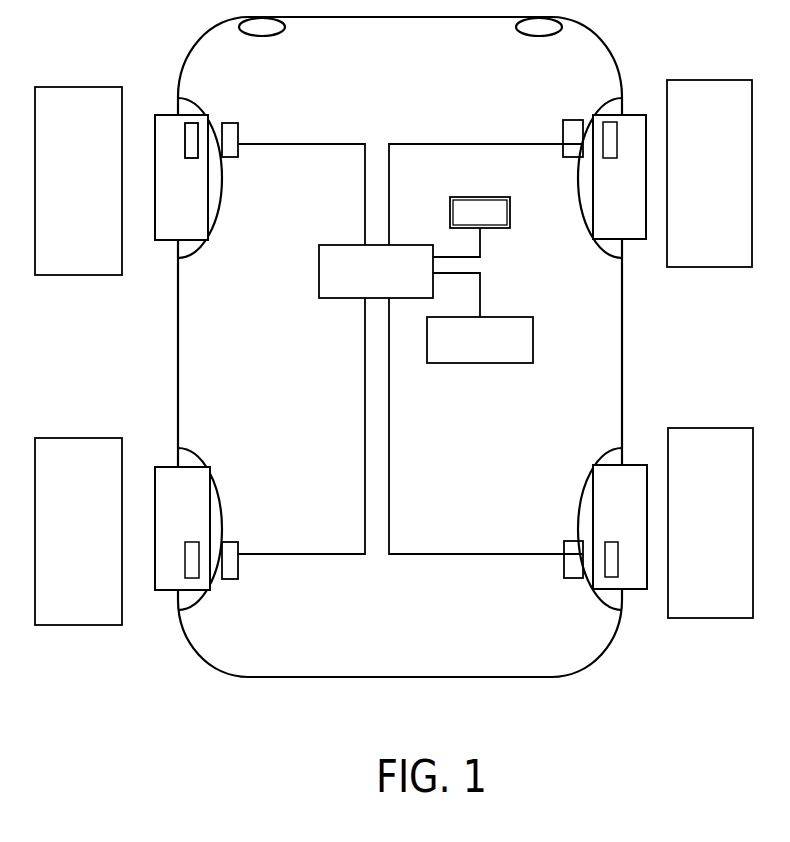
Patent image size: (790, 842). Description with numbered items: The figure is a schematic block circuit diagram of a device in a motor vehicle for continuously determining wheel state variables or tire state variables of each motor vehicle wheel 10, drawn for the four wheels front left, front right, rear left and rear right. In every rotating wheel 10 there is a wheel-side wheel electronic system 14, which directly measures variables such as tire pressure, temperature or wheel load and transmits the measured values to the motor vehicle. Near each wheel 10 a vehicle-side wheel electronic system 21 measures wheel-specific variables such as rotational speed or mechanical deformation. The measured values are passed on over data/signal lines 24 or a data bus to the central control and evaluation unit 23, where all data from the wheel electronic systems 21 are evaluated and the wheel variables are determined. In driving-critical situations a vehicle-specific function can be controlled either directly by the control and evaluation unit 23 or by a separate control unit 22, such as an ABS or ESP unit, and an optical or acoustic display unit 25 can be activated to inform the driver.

The motor vehicle wheel 10 is at (138, 205).
The wheel-side wheel electronic system 14 is at (186, 147).
The vehicle-side wheel electronic system 21 is at (223, 157).
The control unit 22 is at (477, 363).
The central control and evaluation unit 23 is at (318, 270).
The data/signal lines 24 is at (365, 345).
The display unit 25 is at (489, 226).